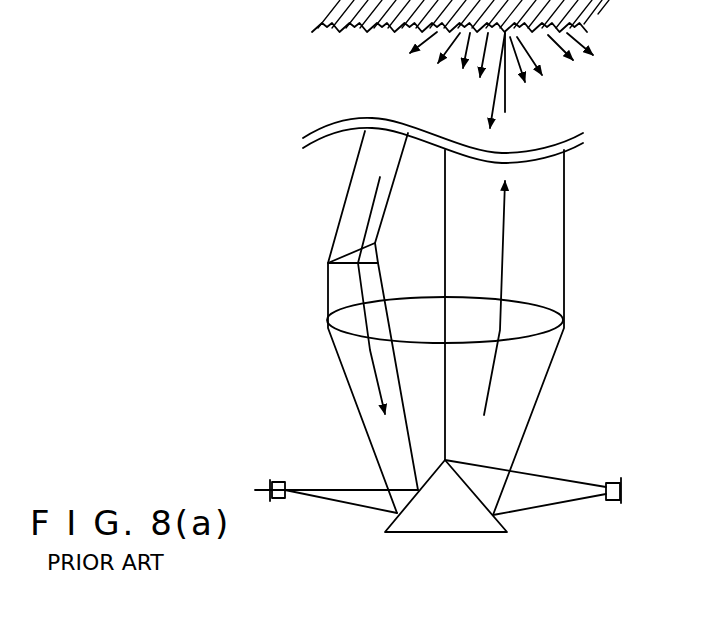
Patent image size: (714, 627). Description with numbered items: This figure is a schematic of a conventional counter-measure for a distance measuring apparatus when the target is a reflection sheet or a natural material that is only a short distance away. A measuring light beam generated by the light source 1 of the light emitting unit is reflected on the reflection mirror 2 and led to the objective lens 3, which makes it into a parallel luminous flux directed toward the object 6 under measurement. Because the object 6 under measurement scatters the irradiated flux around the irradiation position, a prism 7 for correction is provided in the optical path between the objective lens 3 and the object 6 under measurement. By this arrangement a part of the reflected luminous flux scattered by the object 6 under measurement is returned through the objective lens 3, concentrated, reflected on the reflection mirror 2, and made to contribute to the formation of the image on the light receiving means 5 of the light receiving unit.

The light source 1 is at (612, 482).
The reflection mirror 2 is at (450, 520).
The objective lens 3 is at (548, 319).
The light receiving means 5 is at (281, 481).
The object under measurement 6 is at (578, 5).
The prism 7 is at (348, 253).